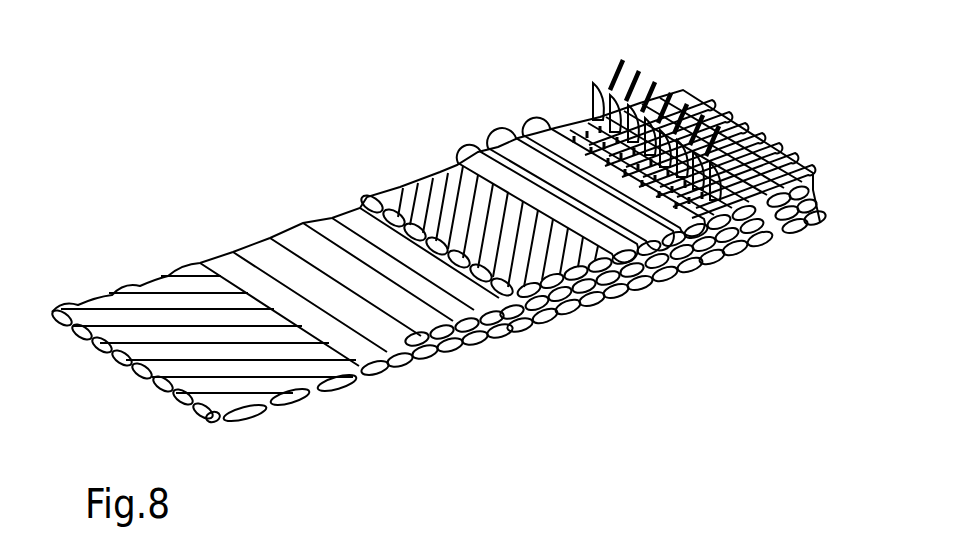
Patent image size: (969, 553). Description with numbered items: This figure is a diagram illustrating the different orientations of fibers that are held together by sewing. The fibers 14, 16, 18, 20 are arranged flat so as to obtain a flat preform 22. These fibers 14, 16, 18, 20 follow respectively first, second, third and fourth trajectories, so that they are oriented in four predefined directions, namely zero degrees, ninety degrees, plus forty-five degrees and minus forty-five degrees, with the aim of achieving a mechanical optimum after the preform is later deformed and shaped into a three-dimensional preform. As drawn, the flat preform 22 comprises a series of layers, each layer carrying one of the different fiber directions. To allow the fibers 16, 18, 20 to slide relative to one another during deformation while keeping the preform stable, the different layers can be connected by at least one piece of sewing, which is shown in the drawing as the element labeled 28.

The fibers 14 is at (598, 118).
The fibers 16 is at (297, 250).
The fibers 18 is at (423, 178).
The fibers 20 is at (163, 313).
The flat preform 22 is at (528, 348).
The stitched fastening region 28 is at (755, 187).